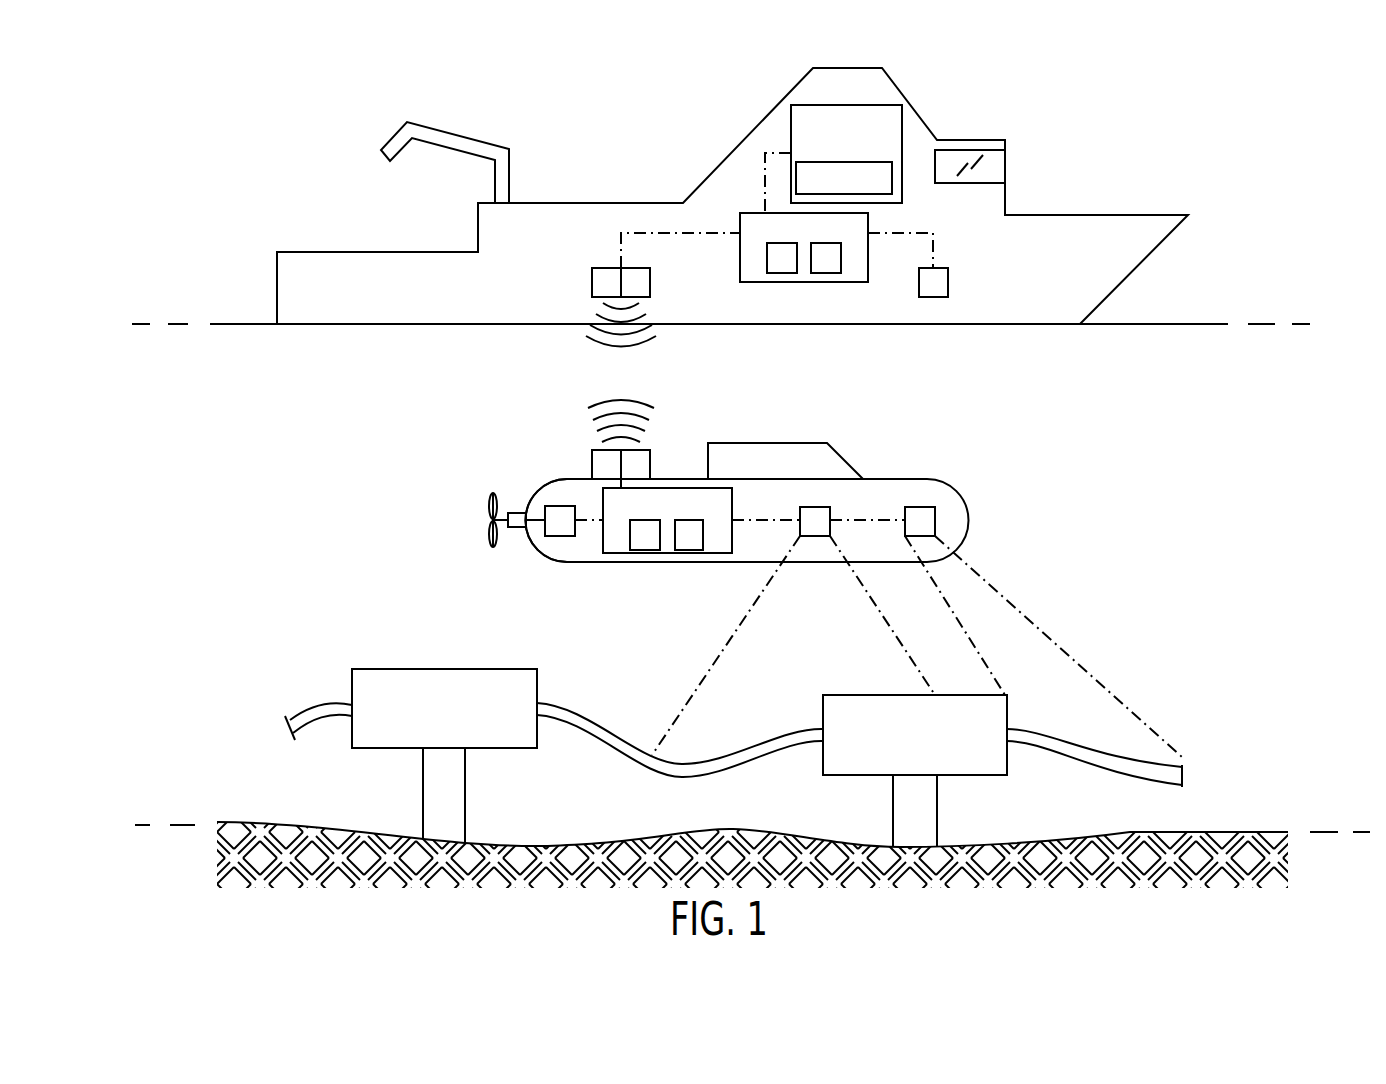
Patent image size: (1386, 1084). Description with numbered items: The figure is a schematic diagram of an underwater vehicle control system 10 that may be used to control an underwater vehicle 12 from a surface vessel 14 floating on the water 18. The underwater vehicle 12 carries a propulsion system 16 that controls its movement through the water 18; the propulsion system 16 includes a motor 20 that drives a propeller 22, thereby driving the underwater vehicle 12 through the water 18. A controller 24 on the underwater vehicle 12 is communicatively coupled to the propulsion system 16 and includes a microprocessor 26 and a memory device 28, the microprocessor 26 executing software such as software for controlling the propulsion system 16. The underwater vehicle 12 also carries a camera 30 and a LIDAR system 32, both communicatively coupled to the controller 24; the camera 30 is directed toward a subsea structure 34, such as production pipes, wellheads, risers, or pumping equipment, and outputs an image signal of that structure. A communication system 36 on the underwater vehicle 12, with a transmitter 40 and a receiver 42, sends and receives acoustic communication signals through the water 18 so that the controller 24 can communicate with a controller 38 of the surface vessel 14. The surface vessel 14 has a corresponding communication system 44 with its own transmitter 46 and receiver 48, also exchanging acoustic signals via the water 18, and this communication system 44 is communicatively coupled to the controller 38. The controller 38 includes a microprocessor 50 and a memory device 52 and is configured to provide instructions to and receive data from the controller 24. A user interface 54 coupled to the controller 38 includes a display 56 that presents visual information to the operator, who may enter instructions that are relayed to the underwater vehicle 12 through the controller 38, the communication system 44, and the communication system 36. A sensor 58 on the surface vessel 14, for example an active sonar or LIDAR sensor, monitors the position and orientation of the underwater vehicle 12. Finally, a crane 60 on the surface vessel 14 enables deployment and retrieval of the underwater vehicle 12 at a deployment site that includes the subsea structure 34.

The underwater vehicle control system 10 is at (1250, 166).
The underwater vehicle 12 is at (996, 450).
The surface vessel 14 is at (880, 95).
The propulsion system 16 is at (560, 581).
The water 18 is at (1084, 501).
The motor 20 is at (560, 536).
The propeller 22 is at (490, 508).
The controller 24 is at (667, 553).
The microprocessor 26 is at (645, 550).
The memory device 28 is at (690, 550).
The camera 30 is at (922, 507).
The LIDAR system 32 is at (813, 507).
The subsea structure 34 is at (1191, 722).
The communication system 36 is at (564, 438).
The controller 38 is at (740, 228).
The transmitter 40 is at (592, 465).
The receiver 42 is at (650, 465).
The communication system 44 is at (503, 297).
The transmitter 46 is at (592, 283).
The receiver 48 is at (650, 283).
The microprocessor 50 is at (782, 273).
The memory device 52 is at (826, 273).
The user interface 54 is at (826, 105).
The display 56 is at (892, 182).
The sensor 58 is at (948, 280).
The crane 60 is at (458, 136).